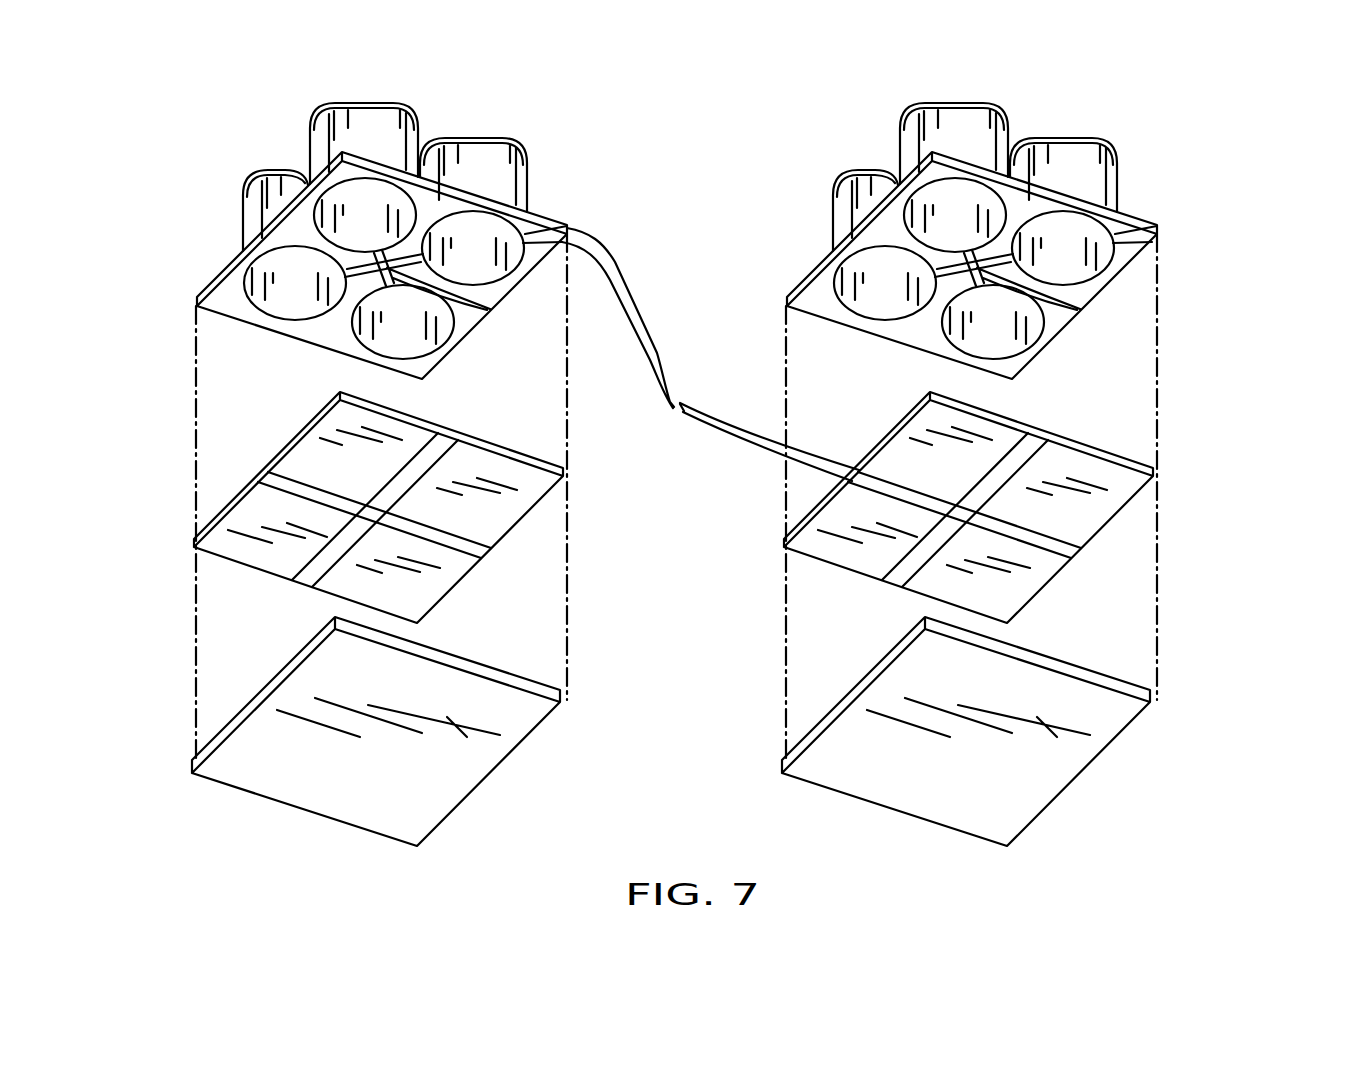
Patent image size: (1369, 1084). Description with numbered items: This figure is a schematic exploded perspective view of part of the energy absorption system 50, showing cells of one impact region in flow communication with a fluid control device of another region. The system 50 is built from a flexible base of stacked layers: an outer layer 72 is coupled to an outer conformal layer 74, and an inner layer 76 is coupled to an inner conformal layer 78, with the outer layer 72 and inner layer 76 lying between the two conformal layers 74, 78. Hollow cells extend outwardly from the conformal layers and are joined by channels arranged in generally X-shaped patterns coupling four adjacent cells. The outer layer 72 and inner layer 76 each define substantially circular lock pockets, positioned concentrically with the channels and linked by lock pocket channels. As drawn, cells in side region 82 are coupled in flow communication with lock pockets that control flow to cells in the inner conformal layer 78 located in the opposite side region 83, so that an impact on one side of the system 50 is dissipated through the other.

The energy absorption system 50 is at (1072, 474).
The outer layer 72 is at (565, 471).
The outer conformal layer 74 is at (217, 272).
The inner layer 76 is at (997, 507).
The inner conformal layer 78 is at (1005, 265).
The side region 82 is at (327, 474).
The side region 83 is at (1072, 474).